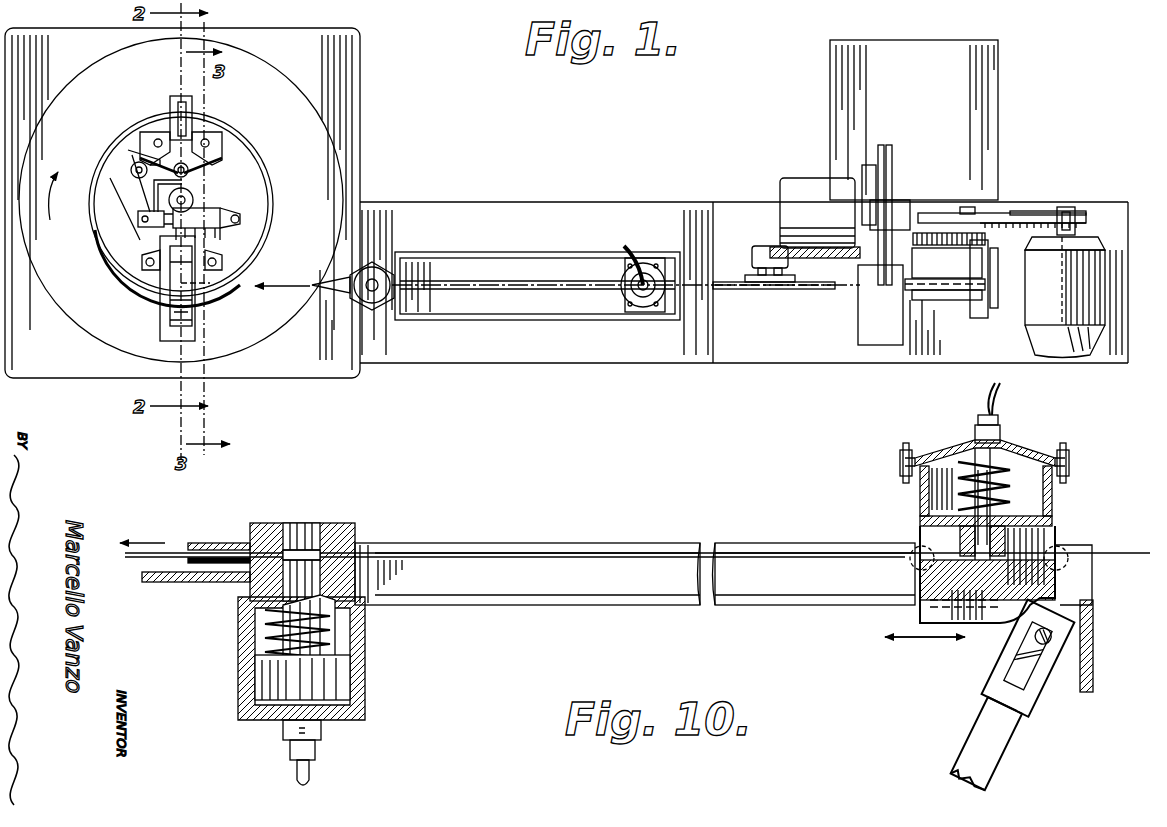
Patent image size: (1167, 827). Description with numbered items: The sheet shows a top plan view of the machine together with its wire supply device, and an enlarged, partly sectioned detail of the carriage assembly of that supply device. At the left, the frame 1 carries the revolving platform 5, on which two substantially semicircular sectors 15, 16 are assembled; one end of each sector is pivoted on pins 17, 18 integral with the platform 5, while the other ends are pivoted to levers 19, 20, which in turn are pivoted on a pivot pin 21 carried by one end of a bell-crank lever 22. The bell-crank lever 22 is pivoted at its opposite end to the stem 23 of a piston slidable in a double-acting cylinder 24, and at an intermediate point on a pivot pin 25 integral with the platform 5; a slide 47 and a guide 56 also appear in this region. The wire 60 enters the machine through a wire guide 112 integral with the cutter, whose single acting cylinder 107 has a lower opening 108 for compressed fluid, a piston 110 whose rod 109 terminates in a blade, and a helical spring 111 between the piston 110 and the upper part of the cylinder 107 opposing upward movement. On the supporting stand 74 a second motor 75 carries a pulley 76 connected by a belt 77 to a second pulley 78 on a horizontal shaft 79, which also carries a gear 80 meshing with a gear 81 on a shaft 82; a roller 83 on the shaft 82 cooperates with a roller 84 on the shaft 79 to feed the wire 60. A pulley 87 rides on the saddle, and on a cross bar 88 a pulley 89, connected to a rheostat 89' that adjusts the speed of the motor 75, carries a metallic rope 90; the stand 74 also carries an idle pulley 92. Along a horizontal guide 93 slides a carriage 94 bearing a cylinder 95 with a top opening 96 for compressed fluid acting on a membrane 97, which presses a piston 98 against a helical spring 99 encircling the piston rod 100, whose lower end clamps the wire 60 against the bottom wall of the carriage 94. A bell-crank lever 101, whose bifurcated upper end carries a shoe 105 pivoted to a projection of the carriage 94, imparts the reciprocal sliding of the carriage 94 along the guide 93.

In FIG. 1, the frame 1 is at (345, 75).
In FIG. 1, the revolving platform 5 is at (332, 178).
In FIG. 1, the semicircular sector 16 is at (268, 170).
In FIG. 1, the lever 19 is at (150, 155).
In FIG. 1, the lever 20 is at (208, 158).
In FIG. 1, the pivot pin 21 is at (190, 172).
In FIG. 1, the pivot pin 25 is at (132, 166).
In FIG. 1, the bell-crank lever 22 is at (150, 205).
In FIG. 1, the double-acting cylinder 24 is at (212, 215).
In FIG. 1, the semicircular sector 15 is at (100, 245).
In FIG. 1, the stem 23 is at (152, 258).
In FIG. 1, the pin 17 is at (150, 270).
In FIG. 1, the pin 18 is at (214, 270).
In FIG. 1, the slide 47 is at (172, 312).
In FIG. 1, the guide 56 is at (172, 112).
In FIG. 1, the wire 60 is at (282, 286).
In FIG. 10, the wire 60 is at (572, 553).
In FIG. 1, the wire guide 112 is at (325, 292).
In FIG. 10, the wire guide 112 is at (222, 543).
In FIG. 1, the single acting cylinder 107 is at (374, 270).
In FIG. 10, the single acting cylinder 107 is at (240, 650).
In FIG. 1, the horizontal guide 93 is at (538, 272).
In FIG. 10, the horizontal guide 93 is at (622, 603).
In FIG. 1, the carriage 94 is at (650, 262).
In FIG. 10, the carriage 94 is at (905, 618).
In FIG. 1, the cylinder 95 is at (625, 298).
In FIG. 10, the cylinder 95 is at (922, 498).
In FIG. 1, the idle pulley 92 is at (742, 290).
In FIG. 1, the pulley 87 is at (852, 292).
In FIG. 1, the cross bar 88 is at (884, 340).
In FIG. 1, the roller 83 is at (935, 300).
In FIG. 1, the roller 84 is at (972, 305).
In FIG. 1, the rheostat 89' is at (815, 196).
In FIG. 1, the pulley 89 is at (900, 202).
In FIG. 1, the metallic rope 90 is at (886, 150).
In FIG. 1, the gear 81 is at (912, 235).
In FIG. 1, the shaft 82 is at (930, 235).
In FIG. 1, the horizontal shaft 79 is at (967, 206).
In FIG. 1, the pulley 78 is at (1002, 213).
In FIG. 1, the belt 77 is at (1032, 212).
In FIG. 1, the pulley 76 is at (1076, 212).
In FIG. 1, the gear 80 is at (984, 240).
In FIG. 1, the supporting stand 74 is at (958, 358).
In FIG. 1, the second motor 75 is at (1080, 355).
In FIG. 10, the rod 109 is at (260, 620).
In FIG. 10, the piston 110 is at (258, 680).
In FIG. 10, the helical spring 111 is at (332, 636).
In FIG. 10, the lower opening 108 is at (286, 728).
In FIG. 10, the top opening 96 is at (975, 430).
In FIG. 10, the piston 98 is at (1000, 475).
In FIG. 10, the membrane 97 is at (1035, 455).
In FIG. 10, the helical spring 99 is at (1012, 490).
In FIG. 10, the piston rod 100 is at (1045, 530).
In FIG. 10, the shoe 105 is at (1015, 645).
In FIG. 10, the bell-crank lever 101 is at (965, 742).